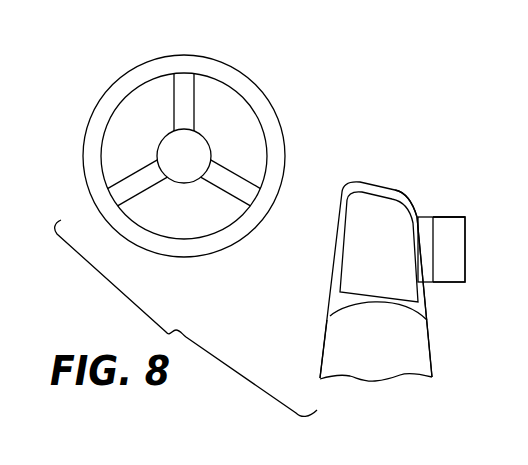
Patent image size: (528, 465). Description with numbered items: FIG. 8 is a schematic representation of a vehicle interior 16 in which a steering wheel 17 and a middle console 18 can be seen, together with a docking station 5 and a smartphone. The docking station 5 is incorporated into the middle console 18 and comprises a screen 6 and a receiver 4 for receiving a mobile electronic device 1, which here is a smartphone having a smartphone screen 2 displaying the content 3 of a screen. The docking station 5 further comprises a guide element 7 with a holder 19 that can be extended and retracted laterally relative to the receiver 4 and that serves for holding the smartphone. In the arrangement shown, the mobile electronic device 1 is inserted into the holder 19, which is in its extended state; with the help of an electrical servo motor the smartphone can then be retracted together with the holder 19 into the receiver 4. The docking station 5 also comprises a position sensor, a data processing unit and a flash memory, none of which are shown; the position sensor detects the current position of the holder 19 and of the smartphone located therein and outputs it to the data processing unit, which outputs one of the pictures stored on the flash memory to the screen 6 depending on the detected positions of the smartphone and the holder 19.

The mobile electronic device 1 is at (464, 248).
The smartphone screen 2 is at (449, 236).
The content of a screen 3 is at (449, 264).
The receiver 4 is at (417, 214).
The docking station 5 is at (334, 258).
The screen 6 is at (345, 239).
The guide element 7 is at (425, 283).
The vehicle interior 16 is at (358, 104).
The steering wheel 17 is at (133, 245).
The middle console 18 is at (324, 343).
The holder 19 is at (465, 248).